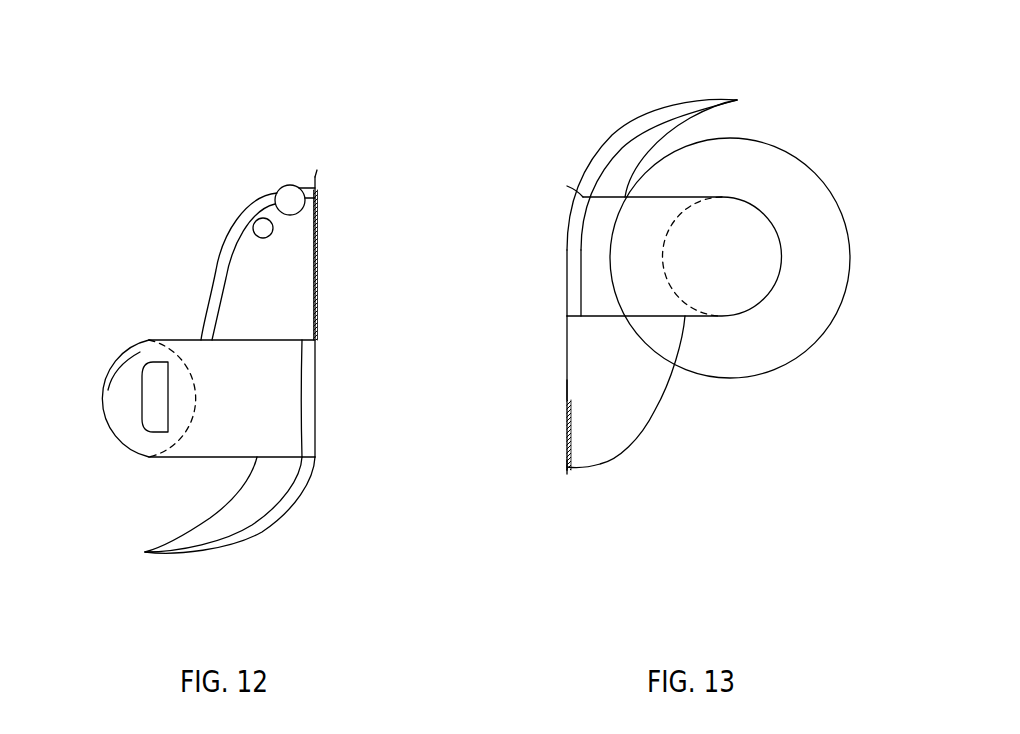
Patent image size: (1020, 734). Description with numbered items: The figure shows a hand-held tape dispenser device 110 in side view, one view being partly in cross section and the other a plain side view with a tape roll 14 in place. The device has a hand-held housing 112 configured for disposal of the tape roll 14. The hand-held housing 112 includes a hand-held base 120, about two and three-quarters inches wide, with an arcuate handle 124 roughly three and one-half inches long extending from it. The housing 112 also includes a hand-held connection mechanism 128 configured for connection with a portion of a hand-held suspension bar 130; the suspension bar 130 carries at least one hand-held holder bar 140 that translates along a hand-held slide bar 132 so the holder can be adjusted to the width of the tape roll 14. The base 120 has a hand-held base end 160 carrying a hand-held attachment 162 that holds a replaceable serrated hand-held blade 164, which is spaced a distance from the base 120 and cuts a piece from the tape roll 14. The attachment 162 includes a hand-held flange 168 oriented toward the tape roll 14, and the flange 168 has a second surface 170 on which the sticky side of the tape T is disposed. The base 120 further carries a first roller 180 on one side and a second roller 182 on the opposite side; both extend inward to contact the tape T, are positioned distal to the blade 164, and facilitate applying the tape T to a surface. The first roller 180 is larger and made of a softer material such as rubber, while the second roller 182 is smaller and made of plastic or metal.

In FIG. 13, the tape roll 14 is at (818, 168).
In FIG. 13, the tape T is at (788, 343).
In FIG. 12, the hand-held tape dispenser device 110 is at (68, 139).
In FIG. 13, the hand-held tape dispenser device 110 is at (507, 117).
In FIG. 12, the hand-held housing 112 is at (293, 392).
In FIG. 13, the hand-held housing 112 is at (598, 257).
In FIG. 12, the hand-held base 120 is at (268, 387).
In FIG. 12, the handle 124 is at (325, 457).
In FIG. 13, the handle 124 is at (640, 122).
In FIG. 12, the hand-held connection mechanism 128 is at (150, 340).
In FIG. 12, the hand-held suspension bar 130 is at (152, 427).
In FIG. 12, the hand-held slide bar 132 is at (152, 398).
In FIG. 12, the hand-held holder bar 140 is at (183, 437).
In FIG. 12, the hand-held base end 160 is at (385, 286).
In FIG. 13, the hand-held base end 160 is at (498, 461).
In FIG. 12, the hand-held attachment 162 is at (317, 192).
In FIG. 13, the hand-held attachment 162 is at (567, 468).
In FIG. 12, the hand-held blade 164 is at (330, 146).
In FIG. 13, the hand-held blade 164 is at (582, 513).
In FIG. 12, the hand-held flange 168 is at (318, 200).
In FIG. 13, the hand-held flange 168 is at (567, 433).
In FIG. 12, the second surface 170 is at (316, 257).
In FIG. 13, the second surface 170 is at (567, 400).
In FIG. 12, the first roller 180 is at (284, 186).
In FIG. 12, the second roller 182 is at (257, 219).